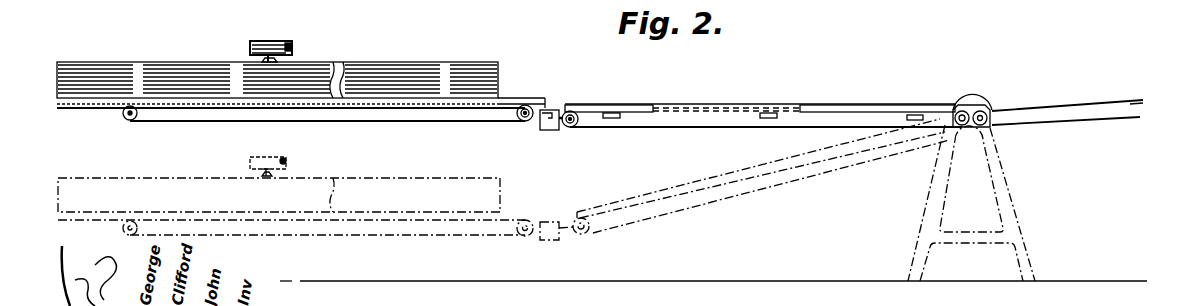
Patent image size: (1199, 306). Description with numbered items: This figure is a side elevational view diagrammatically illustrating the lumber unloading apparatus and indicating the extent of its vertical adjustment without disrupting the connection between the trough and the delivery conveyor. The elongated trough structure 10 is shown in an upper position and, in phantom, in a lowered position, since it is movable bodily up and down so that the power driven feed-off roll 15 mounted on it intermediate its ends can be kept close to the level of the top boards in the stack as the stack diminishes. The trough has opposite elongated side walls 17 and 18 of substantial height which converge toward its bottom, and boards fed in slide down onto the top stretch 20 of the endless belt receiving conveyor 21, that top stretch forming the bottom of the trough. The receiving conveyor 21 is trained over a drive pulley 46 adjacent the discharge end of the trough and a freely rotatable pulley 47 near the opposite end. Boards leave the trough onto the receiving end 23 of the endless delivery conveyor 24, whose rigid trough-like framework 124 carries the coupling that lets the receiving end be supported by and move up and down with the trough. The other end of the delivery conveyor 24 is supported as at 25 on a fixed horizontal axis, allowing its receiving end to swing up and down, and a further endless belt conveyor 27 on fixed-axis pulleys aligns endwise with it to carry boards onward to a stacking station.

The trough structure 10 is at (388, 56).
The feed-off roll 15 is at (272, 41).
The side wall 17 is at (428, 55).
The side wall 18 is at (314, 68).
The top stretch 20 is at (404, 108).
The receiving conveyor 21 is at (472, 122).
The receiving end 23 is at (606, 112).
The delivery conveyor 24 is at (785, 90).
The support 25 is at (937, 178).
The endless belt conveyor 27 is at (1078, 97).
The drive pulley 46 is at (526, 122).
The freely rotatable pulley 47 is at (122, 117).
The trough-like framework 124 is at (603, 89).